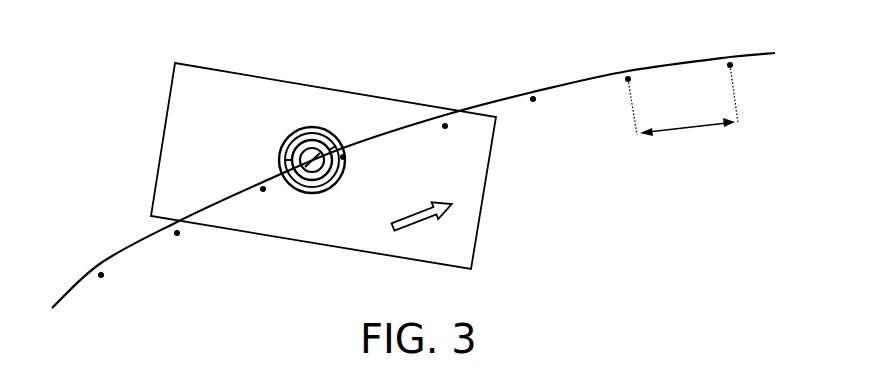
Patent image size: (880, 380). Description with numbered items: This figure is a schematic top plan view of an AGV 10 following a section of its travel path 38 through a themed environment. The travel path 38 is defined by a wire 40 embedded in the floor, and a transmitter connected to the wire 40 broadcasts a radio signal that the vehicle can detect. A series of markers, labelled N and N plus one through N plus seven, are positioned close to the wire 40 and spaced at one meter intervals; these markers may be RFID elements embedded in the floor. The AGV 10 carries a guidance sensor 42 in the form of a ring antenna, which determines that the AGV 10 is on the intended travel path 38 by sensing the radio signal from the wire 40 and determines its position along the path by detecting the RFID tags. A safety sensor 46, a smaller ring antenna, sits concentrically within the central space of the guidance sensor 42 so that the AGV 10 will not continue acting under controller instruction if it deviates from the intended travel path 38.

The AGV 10 is at (226, 58).
The travel path 38 is at (578, 65).
The wire 40 is at (128, 247).
The guidance sensor 42 is at (278, 156).
The safety sensor 46 is at (313, 181).